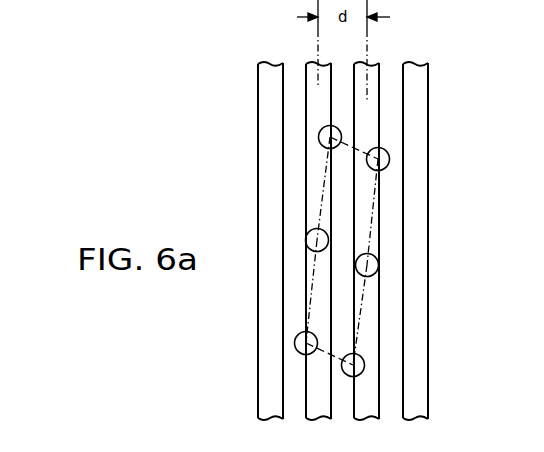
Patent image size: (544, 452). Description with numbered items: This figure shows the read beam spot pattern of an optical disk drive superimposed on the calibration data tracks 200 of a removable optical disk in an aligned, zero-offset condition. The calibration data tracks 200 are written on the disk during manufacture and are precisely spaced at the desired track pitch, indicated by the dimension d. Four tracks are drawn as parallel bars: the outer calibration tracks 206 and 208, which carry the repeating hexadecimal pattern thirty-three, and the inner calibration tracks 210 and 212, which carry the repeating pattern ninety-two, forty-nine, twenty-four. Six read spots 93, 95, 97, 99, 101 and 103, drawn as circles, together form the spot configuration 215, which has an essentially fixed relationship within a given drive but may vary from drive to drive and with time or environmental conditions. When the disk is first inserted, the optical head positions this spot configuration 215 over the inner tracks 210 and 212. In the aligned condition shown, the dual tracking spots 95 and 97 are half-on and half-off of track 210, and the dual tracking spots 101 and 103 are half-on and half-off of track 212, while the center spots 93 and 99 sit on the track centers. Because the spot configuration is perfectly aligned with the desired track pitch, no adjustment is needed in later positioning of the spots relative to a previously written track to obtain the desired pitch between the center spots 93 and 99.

The calibration data tracks 200 is at (246, 70).
The outer calibration track 206 is at (258, 128).
The inner calibration data track 210 is at (318, 62).
The inner calibration data track 212 is at (372, 62).
The outer calibration track 208 is at (416, 140).
The spot configuration 215 is at (325, 177).
The center read spot 93 is at (307, 236).
The dual tracking spot 95 is at (334, 126).
The dual tracking spot 97 is at (296, 345).
The center read spot 99 is at (377, 258).
The dual tracking spot 101 is at (364, 366).
The dual tracking spot 103 is at (383, 148).